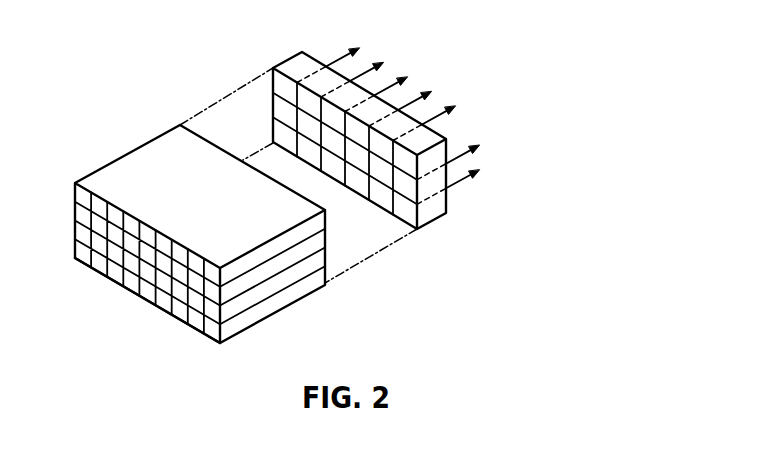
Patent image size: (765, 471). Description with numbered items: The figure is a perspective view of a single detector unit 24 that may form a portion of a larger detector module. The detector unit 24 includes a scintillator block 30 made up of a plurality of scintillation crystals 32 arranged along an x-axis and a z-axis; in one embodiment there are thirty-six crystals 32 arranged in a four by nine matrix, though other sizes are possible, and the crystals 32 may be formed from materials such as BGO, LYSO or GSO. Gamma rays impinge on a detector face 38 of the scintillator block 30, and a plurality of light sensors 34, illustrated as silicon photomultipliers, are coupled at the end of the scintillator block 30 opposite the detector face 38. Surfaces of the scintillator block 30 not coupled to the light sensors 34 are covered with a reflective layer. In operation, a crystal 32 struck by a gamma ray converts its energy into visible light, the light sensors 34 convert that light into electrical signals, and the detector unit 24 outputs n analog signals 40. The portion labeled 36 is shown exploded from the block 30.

The detector unit 24 is at (518, 92).
The scintillator block 30 is at (127, 170).
The scintillation crystals 32 is at (173, 317).
The light sensors 34 is at (408, 188).
The separated (exploded) portion 36 is at (228, 138).
The detector face 38 is at (122, 303).
The analog signals 40 is at (483, 192).